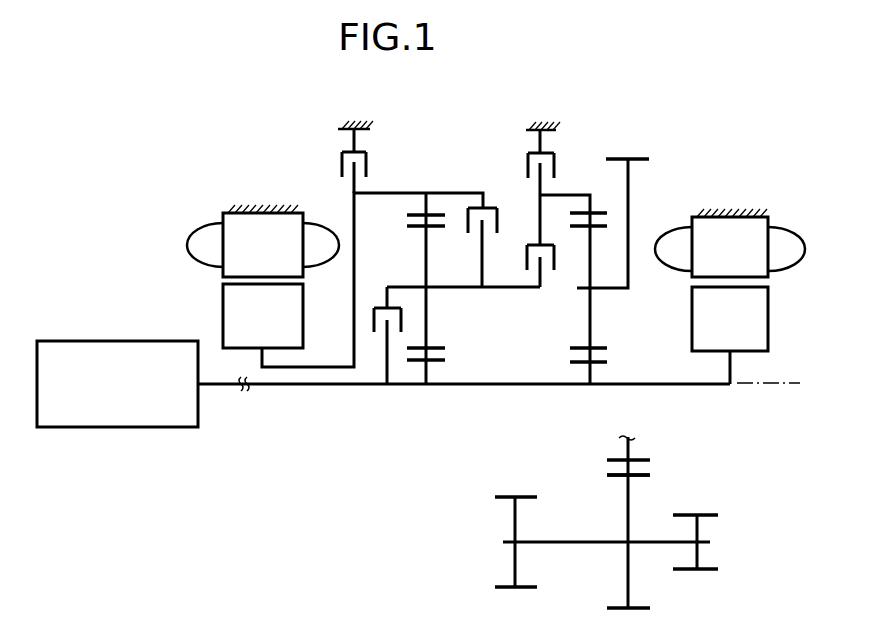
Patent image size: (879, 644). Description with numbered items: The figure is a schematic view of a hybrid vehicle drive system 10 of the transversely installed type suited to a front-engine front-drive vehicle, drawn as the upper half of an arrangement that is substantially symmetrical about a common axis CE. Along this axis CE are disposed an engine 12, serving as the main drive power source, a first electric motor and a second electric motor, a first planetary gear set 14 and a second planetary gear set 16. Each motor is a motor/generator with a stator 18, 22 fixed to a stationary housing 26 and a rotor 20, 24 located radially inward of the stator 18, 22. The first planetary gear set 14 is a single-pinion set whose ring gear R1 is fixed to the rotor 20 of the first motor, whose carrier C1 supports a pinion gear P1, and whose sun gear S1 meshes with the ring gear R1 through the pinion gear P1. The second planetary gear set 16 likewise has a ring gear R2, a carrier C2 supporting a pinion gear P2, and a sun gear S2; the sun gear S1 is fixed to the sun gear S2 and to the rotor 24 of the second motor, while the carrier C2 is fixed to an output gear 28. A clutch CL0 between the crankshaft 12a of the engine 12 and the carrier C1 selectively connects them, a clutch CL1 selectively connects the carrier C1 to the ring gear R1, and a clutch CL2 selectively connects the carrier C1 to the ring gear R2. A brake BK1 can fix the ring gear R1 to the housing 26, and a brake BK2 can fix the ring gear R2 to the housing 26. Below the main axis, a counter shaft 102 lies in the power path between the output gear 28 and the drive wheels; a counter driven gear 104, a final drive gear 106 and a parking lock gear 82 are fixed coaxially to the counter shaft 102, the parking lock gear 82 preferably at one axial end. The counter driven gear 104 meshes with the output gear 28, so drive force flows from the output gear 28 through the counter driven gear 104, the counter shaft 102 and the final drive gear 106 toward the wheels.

The hybrid vehicle drive system 10 is at (722, 98).
The engine 12 is at (75, 346).
The crankshaft 12a is at (232, 388).
The first planetary gear set 14 is at (457, 321).
The second planetary gear set 16 is at (594, 303).
The stator 18 is at (222, 270).
The rotor 20 is at (222, 316).
The stator 22 is at (768, 273).
The rotor 24 is at (768, 317).
The housing 26 is at (266, 208).
The output gear 28 is at (638, 157).
The parking lock gear 82 is at (707, 513).
The counter shaft 102 is at (567, 543).
The counter driven gear 104 is at (622, 477).
The final drive gear 106 is at (507, 498).
The brake BK1 is at (340, 162).
The brake BK2 is at (528, 163).
The clutch CL0 is at (372, 310).
The clutch CL1 is at (497, 219).
The clutch CL2 is at (527, 249).
The ring gear R1 is at (418, 214).
The pinion gear P1 is at (432, 347).
The sun gear S1 is at (438, 362).
The carrier C1 is at (445, 284).
The ring gear R2 is at (597, 212).
The pinion gear P2 is at (585, 347).
The sun gear S2 is at (600, 363).
The carrier C2 is at (603, 289).
The common axis CE is at (782, 384).